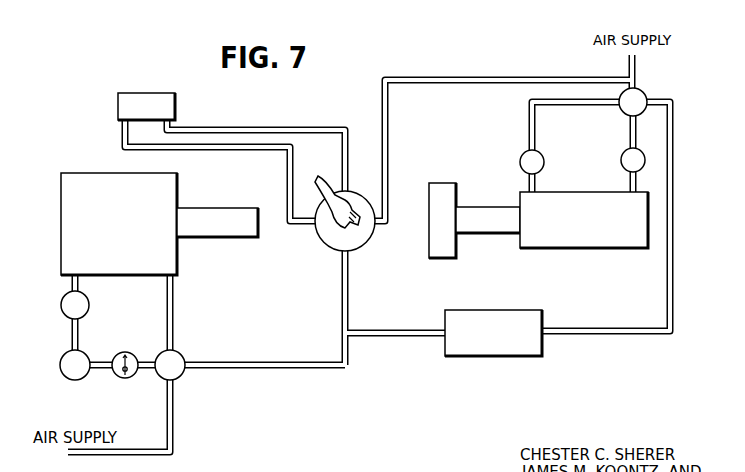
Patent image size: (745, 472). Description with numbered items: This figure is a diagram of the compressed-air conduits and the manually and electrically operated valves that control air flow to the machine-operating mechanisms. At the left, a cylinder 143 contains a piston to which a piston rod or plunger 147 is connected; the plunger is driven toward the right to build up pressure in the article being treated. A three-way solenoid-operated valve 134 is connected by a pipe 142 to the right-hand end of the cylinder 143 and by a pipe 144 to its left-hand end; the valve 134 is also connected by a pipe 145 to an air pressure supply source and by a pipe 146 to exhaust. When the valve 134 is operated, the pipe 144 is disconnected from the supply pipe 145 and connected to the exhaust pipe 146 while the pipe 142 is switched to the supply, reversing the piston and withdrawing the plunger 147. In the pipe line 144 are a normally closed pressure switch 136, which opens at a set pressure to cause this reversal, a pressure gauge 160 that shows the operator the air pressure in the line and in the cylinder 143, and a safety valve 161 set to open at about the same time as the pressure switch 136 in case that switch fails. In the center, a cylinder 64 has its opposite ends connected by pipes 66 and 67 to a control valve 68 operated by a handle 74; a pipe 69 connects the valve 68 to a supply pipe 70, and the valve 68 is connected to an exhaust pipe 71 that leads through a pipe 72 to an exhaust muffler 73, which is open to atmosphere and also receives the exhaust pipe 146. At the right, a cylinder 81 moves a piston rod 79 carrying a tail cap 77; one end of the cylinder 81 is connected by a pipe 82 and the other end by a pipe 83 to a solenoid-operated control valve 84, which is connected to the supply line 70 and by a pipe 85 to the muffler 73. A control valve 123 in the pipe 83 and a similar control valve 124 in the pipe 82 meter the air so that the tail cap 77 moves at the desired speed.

The cylinder 64 is at (152, 98).
The pipe 66 is at (247, 148).
The pipe 67 is at (272, 130).
The control valve 68 is at (352, 247).
The pipe 69 is at (390, 189).
The supply pipe 70 is at (636, 63).
The exhaust pipe 71 is at (349, 300).
The pipe 72 is at (414, 337).
The exhaust muffler 73 is at (523, 314).
The handle 74 is at (327, 160).
The tail cap 77 is at (440, 185).
The piston rod 79 is at (476, 208).
The cylinder 81 is at (592, 196).
The pipe 82 is at (529, 121).
The pipe 83 is at (637, 127).
The solenoid-operated control valve 84 is at (644, 96).
The pipe 85 is at (670, 146).
The control valve 123 is at (628, 135).
The control valve 124 is at (538, 155).
The three-way solenoid-operated valve 134 is at (178, 353).
The pressure switch 136 is at (60, 368).
The pipe 142 is at (172, 298).
The cylinder 143 is at (61, 229).
The pipe 144 is at (72, 333).
The pipe 145 is at (173, 406).
The pipe 146 is at (300, 362).
The piston rod 147 is at (248, 233).
The pressure gauge 160 is at (133, 352).
The safety valve 161 is at (84, 302).